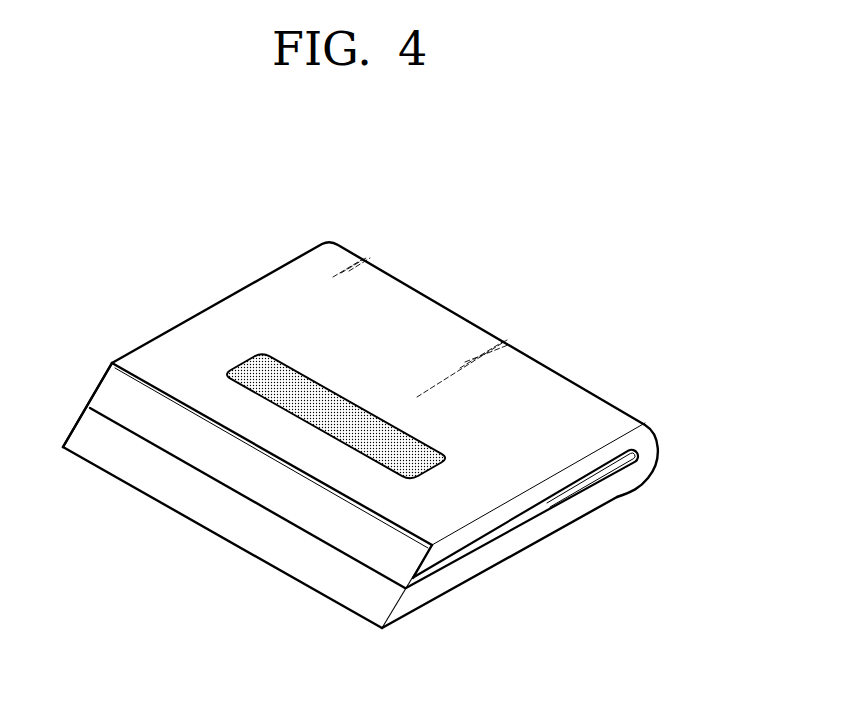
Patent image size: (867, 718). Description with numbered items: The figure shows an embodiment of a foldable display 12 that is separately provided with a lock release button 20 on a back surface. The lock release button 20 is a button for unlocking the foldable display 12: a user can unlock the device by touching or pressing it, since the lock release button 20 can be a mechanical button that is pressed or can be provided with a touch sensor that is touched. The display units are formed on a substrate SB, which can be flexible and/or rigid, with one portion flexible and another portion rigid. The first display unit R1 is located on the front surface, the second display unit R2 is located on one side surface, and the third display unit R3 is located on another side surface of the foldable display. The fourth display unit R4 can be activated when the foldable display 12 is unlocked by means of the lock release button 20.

The foldable display 12 is at (480, 278).
The lock release button 20 is at (253, 367).
The substrate SB is at (510, 543).
The first display unit R1 is at (597, 475).
The second display unit R2 is at (300, 572).
The third display unit R3 is at (350, 537).
The fourth display unit R4 is at (333, 680).